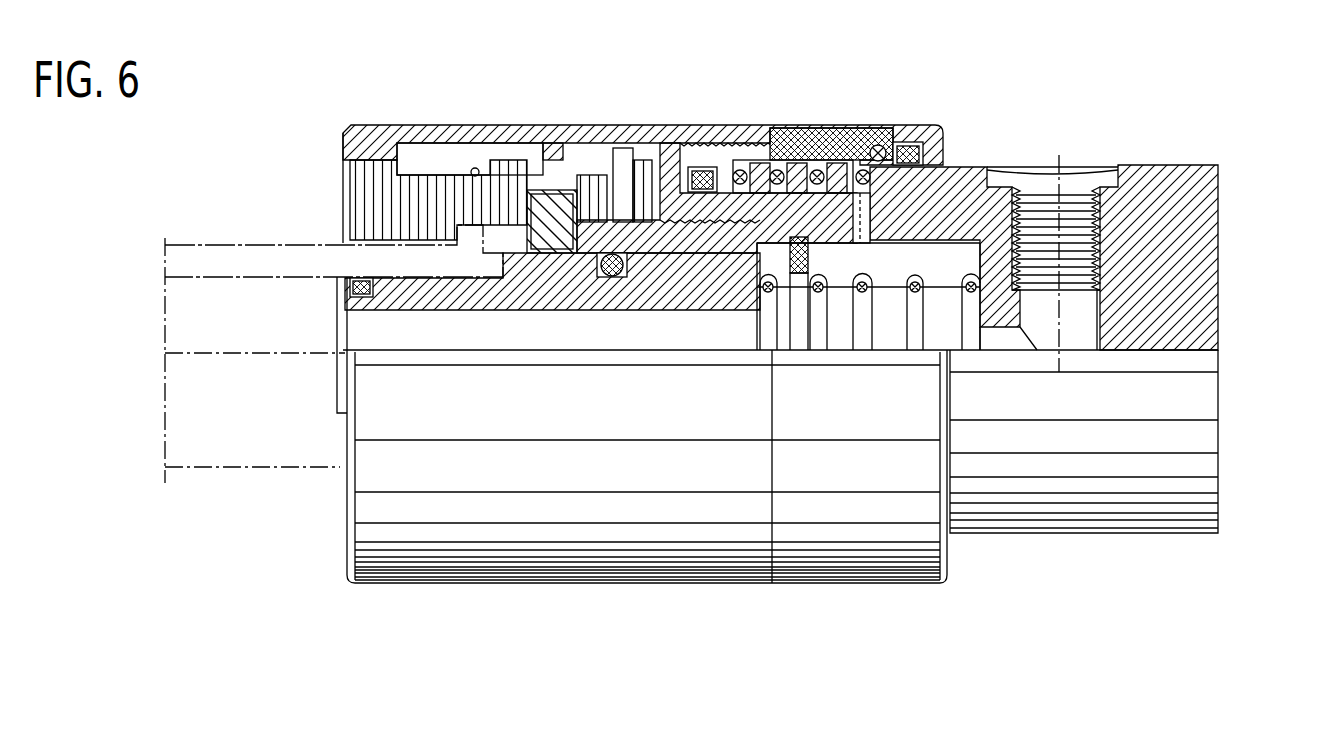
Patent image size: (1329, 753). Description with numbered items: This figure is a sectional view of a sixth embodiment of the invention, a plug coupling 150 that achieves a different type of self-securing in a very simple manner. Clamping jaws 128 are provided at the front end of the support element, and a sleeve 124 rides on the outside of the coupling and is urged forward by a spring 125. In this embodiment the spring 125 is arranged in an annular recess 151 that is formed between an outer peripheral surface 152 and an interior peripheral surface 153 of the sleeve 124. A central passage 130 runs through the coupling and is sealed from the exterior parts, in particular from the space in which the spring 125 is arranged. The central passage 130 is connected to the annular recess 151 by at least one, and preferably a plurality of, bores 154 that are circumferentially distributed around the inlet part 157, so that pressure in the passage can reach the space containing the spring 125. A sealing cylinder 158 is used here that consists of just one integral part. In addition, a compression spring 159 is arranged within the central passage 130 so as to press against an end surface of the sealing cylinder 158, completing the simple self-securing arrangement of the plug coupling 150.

The sleeve 124 is at (578, 137).
The spring 125 is at (847, 167).
The clamping jaws 128 is at (347, 180).
The central passage 130 is at (940, 322).
The plug coupling 150 is at (1000, 129).
The annular recess 151 is at (900, 127).
The outer peripheral surface 152 is at (800, 188).
The interior peripheral surface 153 is at (920, 127).
The bores 154 is at (857, 243).
The inlet part 157 is at (1187, 210).
The sealing cylinder 158 is at (352, 315).
The compression spring 159 is at (862, 327).